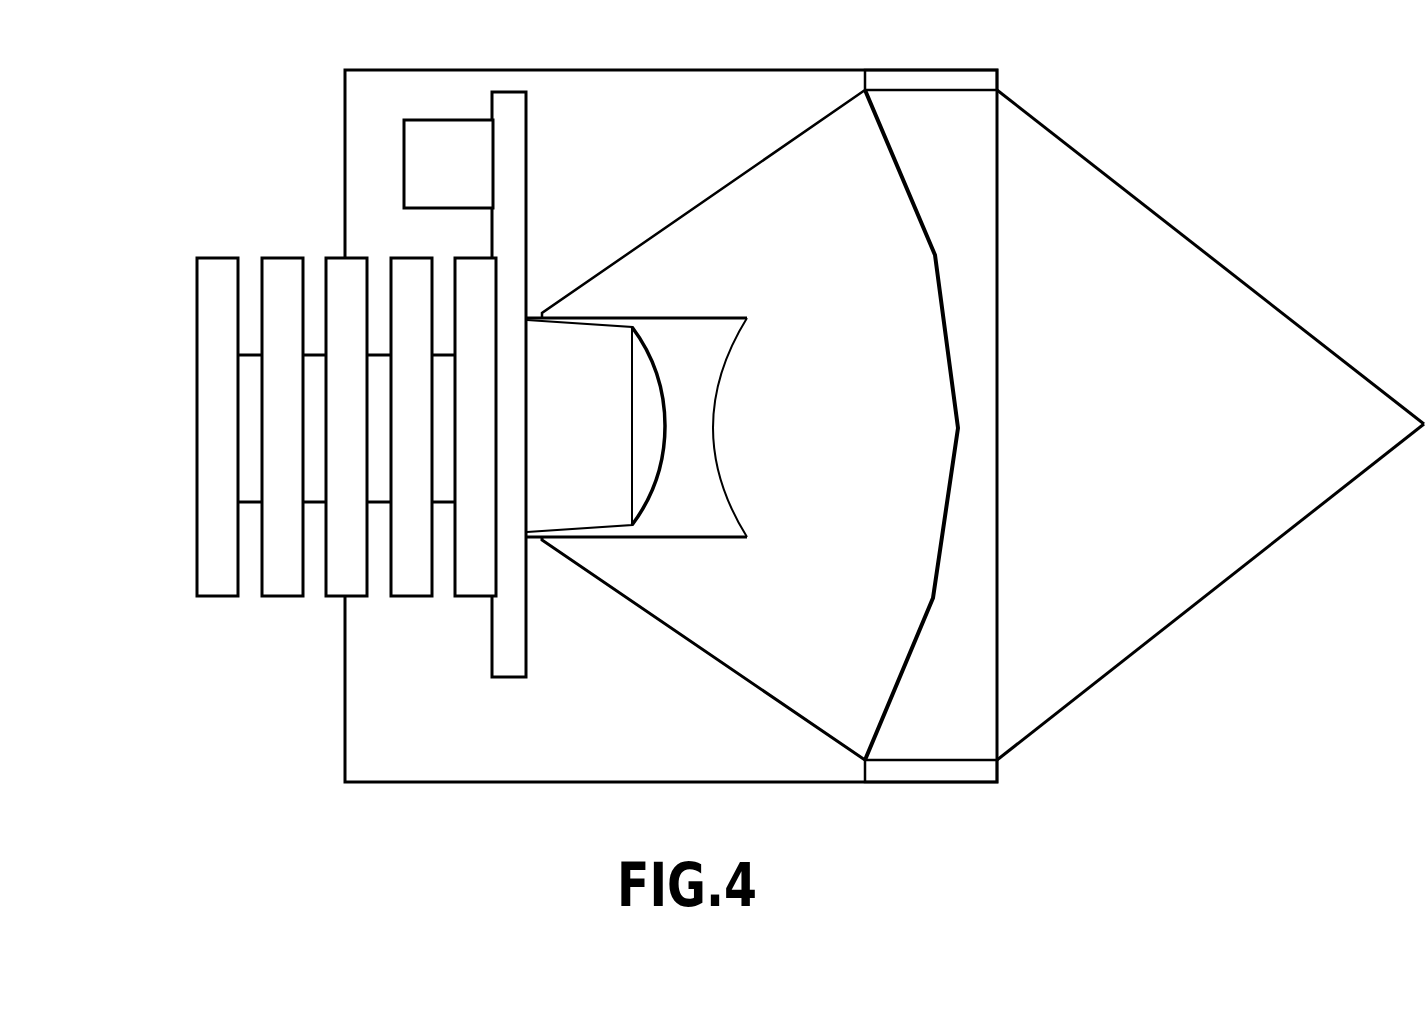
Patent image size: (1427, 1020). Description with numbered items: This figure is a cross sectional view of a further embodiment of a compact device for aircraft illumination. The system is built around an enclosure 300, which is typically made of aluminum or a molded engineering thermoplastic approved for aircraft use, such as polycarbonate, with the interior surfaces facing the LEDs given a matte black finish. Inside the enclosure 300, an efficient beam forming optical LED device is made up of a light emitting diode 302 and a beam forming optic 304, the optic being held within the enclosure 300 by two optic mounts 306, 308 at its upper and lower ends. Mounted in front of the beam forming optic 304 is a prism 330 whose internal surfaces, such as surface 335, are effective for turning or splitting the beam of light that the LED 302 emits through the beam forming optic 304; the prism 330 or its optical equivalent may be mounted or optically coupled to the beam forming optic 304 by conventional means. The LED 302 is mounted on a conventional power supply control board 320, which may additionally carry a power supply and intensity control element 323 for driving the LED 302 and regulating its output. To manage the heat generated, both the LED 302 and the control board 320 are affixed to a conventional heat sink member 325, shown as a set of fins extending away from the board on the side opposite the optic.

The enclosure 300 is at (345, 120).
The light emitting diode 302 is at (618, 420).
The beam forming optic 304 is at (755, 178).
The optic mount 306 is at (947, 68).
The optic mount 308 is at (930, 742).
The power supply control board 320 is at (527, 217).
The power supply and intensity control element 323 is at (478, 180).
The heat sink member 325 is at (212, 597).
The prism 330 is at (1170, 572).
The internal surface 335 is at (1228, 278).